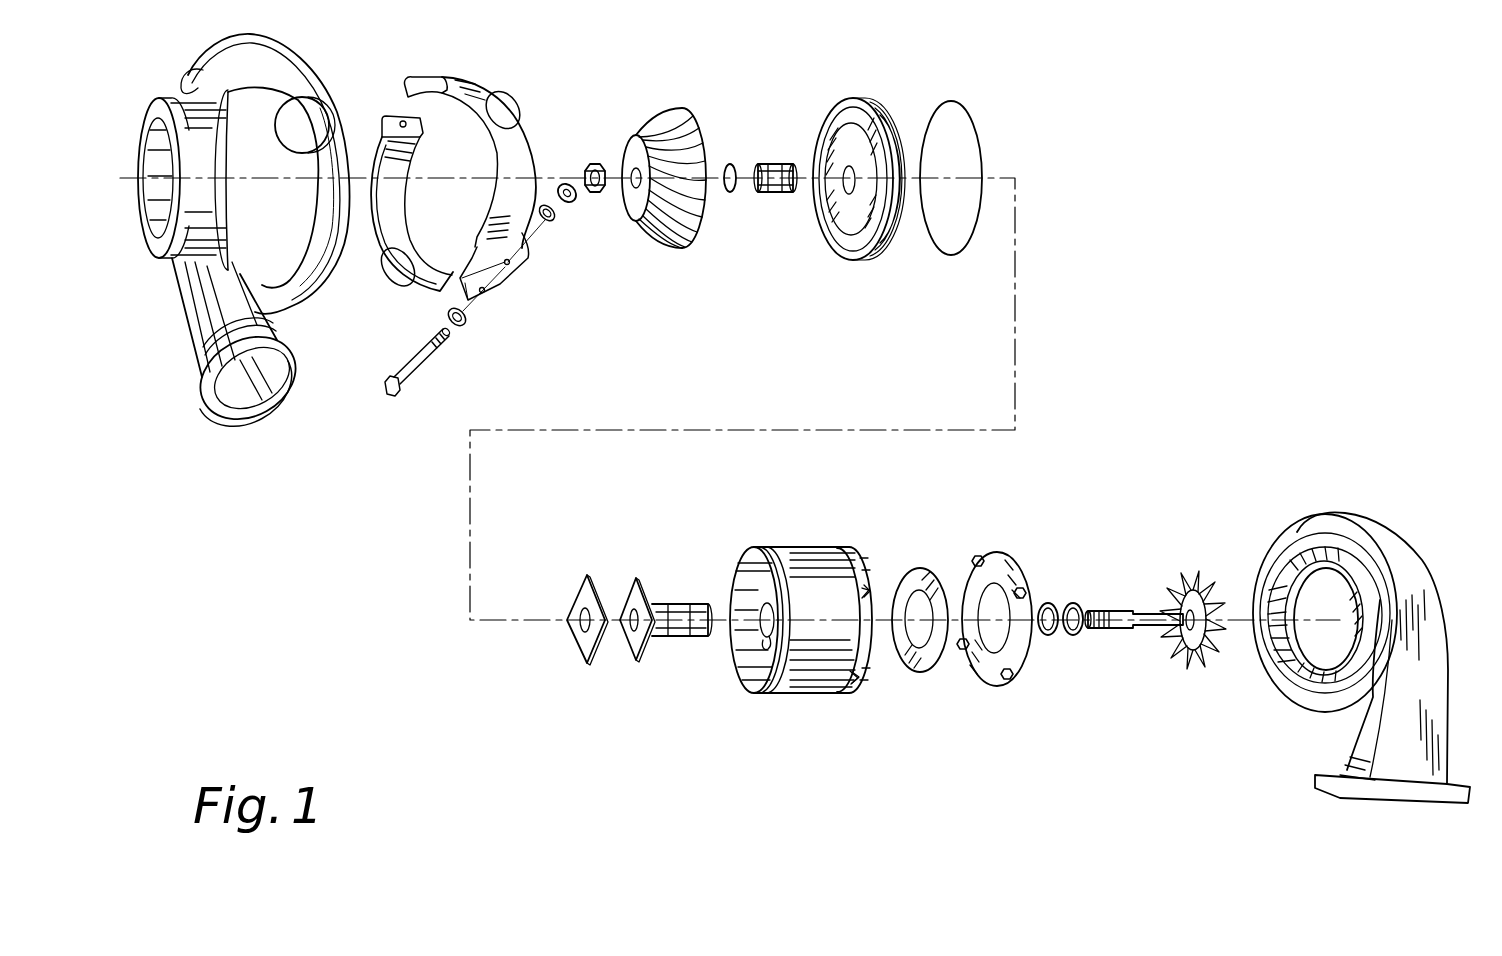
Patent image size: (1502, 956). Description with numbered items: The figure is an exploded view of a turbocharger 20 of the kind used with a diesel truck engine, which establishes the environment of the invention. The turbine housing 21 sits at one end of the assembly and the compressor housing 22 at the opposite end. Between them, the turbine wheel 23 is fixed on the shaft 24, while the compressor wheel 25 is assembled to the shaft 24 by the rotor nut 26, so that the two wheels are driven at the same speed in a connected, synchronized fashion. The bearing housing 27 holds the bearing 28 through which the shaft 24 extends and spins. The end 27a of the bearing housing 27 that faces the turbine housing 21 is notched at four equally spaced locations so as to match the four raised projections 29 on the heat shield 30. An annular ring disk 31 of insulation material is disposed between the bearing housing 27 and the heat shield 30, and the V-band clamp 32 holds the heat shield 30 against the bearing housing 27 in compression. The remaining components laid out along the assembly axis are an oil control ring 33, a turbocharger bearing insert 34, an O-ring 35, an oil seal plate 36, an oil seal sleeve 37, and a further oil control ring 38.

The turbocharger 20 is at (1097, 434).
The turbine housing 21 is at (1348, 505).
The compressor housing 22 is at (193, 332).
The turbine wheel 23 is at (1195, 665).
The shaft 24 is at (1123, 615).
The compressor wheel 25 is at (695, 125).
The rotor nut 26 is at (596, 163).
The bearing housing 27 is at (790, 695).
The end of bearing housing 27a is at (874, 592).
The bearing 28 is at (677, 640).
The raised projections 29 is at (1003, 592).
The heat shield 30 is at (995, 556).
The annular ring disk 31 is at (928, 662).
The V-band clamp 32 is at (386, 228).
The oil control ring 33 is at (1075, 640).
The turbocharger bearing insert 34 is at (587, 667).
The O-ring 35 is at (952, 255).
The oil seal plate 36 is at (848, 218).
The oil seal sleeve 37 is at (777, 195).
The oil control ring 38 is at (733, 195).